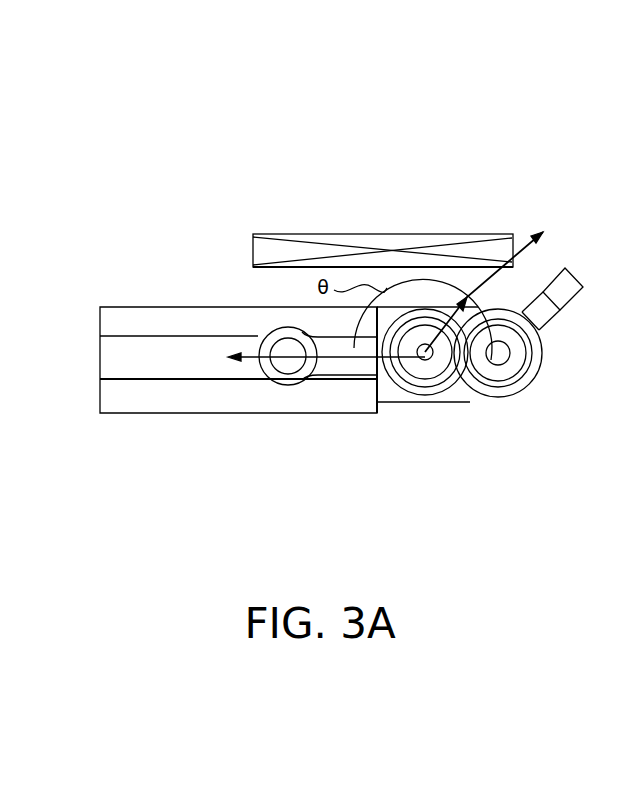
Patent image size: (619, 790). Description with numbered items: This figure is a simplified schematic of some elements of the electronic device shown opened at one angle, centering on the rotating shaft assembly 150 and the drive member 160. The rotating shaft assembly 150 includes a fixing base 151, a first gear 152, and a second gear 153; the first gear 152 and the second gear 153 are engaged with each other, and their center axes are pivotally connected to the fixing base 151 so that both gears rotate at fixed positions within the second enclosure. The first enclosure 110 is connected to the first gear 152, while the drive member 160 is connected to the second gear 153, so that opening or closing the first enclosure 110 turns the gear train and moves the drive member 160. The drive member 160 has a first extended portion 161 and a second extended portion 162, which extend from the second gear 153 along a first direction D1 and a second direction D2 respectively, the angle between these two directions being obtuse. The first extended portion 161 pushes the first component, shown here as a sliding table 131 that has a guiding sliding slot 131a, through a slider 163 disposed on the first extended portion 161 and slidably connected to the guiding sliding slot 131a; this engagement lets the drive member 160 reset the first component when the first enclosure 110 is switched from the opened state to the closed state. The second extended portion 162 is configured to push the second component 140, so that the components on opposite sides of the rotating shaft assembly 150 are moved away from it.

The first enclosure 110 is at (551, 316).
The sliding table 131 is at (206, 394).
The guiding sliding slot 131a is at (135, 385).
The second component 140 is at (373, 242).
The rotating shaft assembly 150 is at (475, 256).
The fixing base 151 is at (521, 308).
The first gear 152 is at (486, 308).
The second gear 153 is at (411, 332).
The drive member 160 is at (368, 434).
The first extended portion 161 is at (362, 364).
The second extended portion 162 is at (455, 362).
The slider 163 is at (286, 366).
The first direction D1 is at (275, 327).
The second direction D2 is at (486, 350).